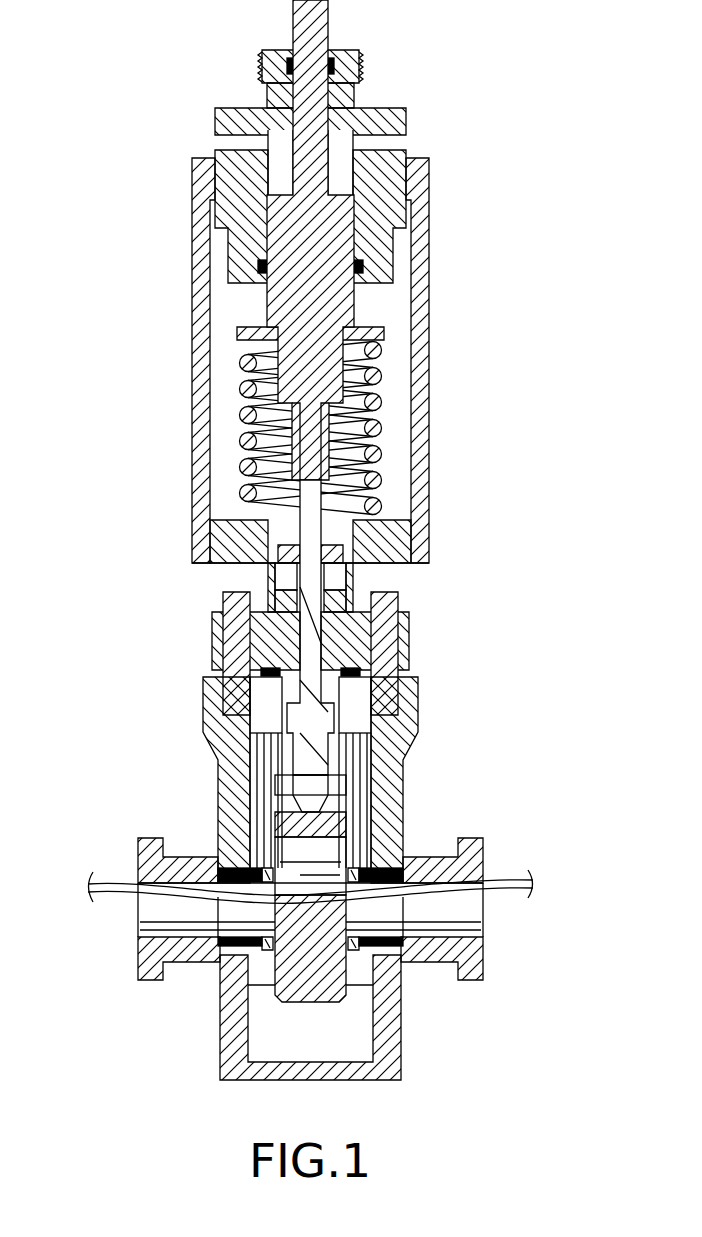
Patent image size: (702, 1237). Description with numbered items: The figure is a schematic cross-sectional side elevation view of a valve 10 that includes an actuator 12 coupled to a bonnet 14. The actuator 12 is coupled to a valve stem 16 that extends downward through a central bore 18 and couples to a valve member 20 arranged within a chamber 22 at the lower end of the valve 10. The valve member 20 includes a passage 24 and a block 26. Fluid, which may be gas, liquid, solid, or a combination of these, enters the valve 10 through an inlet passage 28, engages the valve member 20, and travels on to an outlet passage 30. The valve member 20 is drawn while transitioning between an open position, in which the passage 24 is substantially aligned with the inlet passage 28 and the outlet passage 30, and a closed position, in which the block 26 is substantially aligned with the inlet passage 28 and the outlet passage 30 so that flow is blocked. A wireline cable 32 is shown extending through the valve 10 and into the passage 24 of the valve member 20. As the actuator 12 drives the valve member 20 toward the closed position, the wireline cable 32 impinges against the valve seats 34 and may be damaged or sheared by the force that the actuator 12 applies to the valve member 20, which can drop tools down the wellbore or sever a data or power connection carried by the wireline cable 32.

The valve 10 is at (145, 732).
The actuator 12 is at (125, 240).
The bonnet 14 is at (430, 637).
The valve stem 16 is at (315, 590).
The central bore 18 is at (348, 713).
The valve member 20 is at (272, 980).
The chamber 22 is at (338, 1027).
The passage 24 is at (317, 837).
The block 26 is at (347, 984).
The inlet passage 28 is at (143, 940).
The outlet passage 30 is at (483, 930).
The wireline cable 32 is at (110, 880).
The valve seats 34 is at (248, 876).